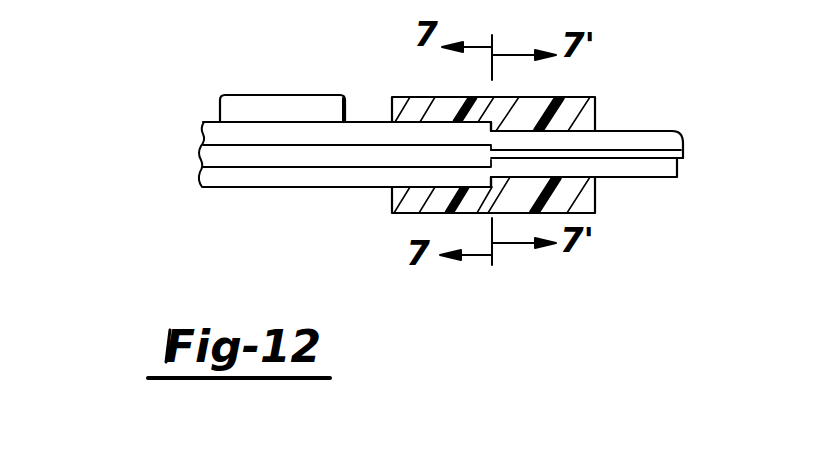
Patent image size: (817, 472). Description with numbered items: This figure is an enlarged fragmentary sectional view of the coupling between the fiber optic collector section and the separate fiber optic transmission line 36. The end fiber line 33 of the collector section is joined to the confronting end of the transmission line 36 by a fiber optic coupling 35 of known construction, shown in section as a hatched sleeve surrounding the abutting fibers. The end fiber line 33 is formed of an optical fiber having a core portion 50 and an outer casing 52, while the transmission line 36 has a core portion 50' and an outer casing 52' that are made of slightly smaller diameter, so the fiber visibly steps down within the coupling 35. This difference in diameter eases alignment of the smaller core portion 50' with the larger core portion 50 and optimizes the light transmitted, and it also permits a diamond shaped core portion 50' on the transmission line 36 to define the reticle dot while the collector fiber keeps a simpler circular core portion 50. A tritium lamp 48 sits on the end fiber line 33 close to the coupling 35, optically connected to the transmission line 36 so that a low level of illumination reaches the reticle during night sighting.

The end fiber line 33 is at (262, 190).
The tritium lamp 48 is at (278, 102).
The core portion 50 is at (347, 227).
The outer casing 52 is at (347, 93).
The fiber optic coupling 35 is at (558, 97).
The outer casing 52' is at (594, 122).
The core portion 50' is at (626, 148).
The fiber optic transmission line 36 is at (648, 172).